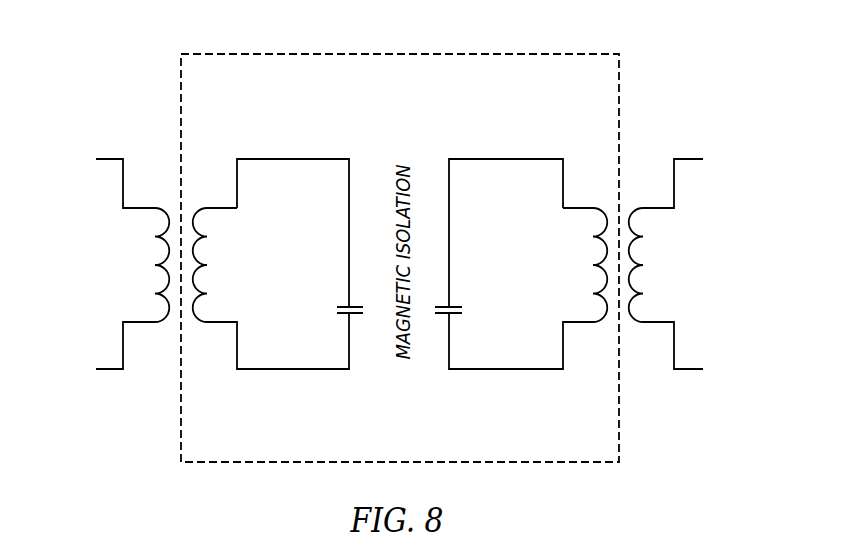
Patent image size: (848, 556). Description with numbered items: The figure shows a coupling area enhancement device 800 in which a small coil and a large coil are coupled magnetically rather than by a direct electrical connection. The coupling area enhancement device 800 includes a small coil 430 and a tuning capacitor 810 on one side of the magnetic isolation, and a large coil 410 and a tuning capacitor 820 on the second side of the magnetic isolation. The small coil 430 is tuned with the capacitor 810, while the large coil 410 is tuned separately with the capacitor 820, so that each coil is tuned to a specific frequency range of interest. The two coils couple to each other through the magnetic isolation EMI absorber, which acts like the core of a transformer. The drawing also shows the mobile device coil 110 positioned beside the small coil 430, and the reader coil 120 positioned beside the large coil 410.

The coupling area enhancement device 800 is at (620, 98).
The mobile device coil 110 is at (142, 207).
The reader coil 120 is at (659, 207).
The small coil 430 is at (220, 207).
The large coil 410 is at (578, 207).
The tuning capacitor 810 is at (343, 317).
The tuning capacitor 820 is at (454, 317).